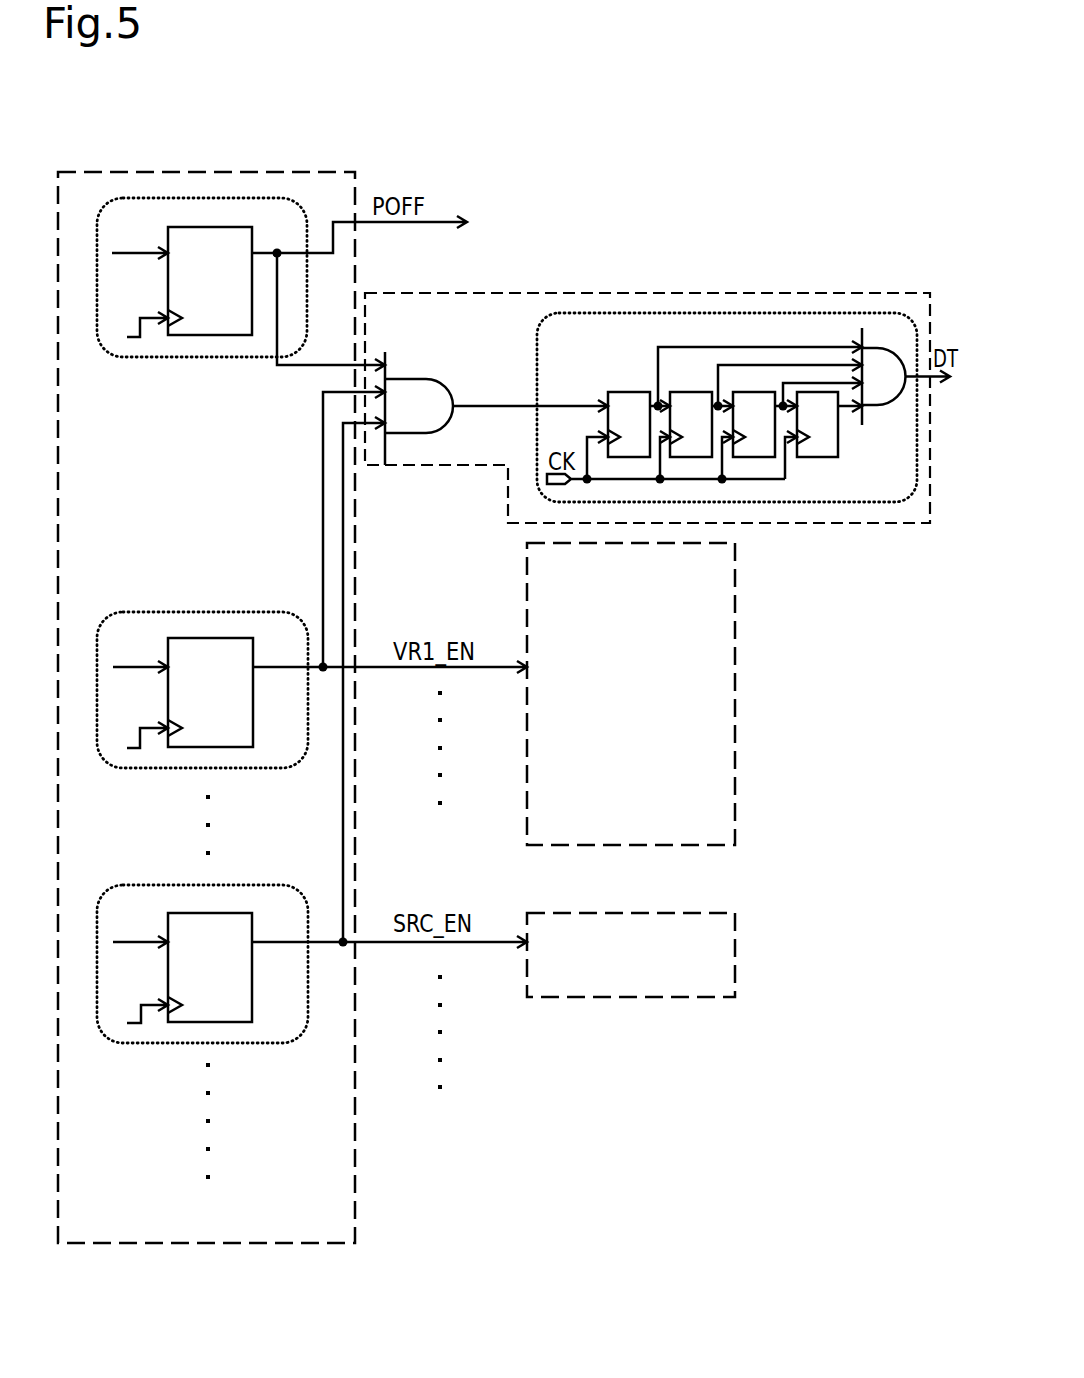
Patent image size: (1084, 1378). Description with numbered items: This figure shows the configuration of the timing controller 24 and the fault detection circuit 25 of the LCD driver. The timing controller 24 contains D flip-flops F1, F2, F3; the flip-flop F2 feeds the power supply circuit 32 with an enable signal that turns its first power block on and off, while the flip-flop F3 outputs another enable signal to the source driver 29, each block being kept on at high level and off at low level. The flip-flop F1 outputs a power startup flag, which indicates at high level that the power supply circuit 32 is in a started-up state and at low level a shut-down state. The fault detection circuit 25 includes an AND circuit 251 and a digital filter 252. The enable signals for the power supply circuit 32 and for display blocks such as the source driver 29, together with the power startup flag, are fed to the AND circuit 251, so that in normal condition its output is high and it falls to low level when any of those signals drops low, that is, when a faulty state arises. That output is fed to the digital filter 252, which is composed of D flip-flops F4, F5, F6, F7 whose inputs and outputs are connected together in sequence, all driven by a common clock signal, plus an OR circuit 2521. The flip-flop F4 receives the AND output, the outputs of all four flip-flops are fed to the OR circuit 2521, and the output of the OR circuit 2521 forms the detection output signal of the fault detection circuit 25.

The timing controller 24 is at (345, 172).
The fault detection circuit 25 is at (918, 293).
The AND circuit 251 is at (430, 433).
The digital filter 252 is at (877, 315).
The OR circuit 2521 is at (885, 406).
The source driver 29 is at (735, 913).
The power supply circuit 32 is at (735, 582).
The D flip-flop F1 is at (168, 237).
The D flip-flop F2 is at (169, 654).
The D flip-flop F3 is at (169, 924).
The D flip-flop F4 is at (632, 374).
The D flip-flop F5 is at (706, 374).
The D flip-flop F6 is at (757, 390).
The D flip-flop F7 is at (833, 458).